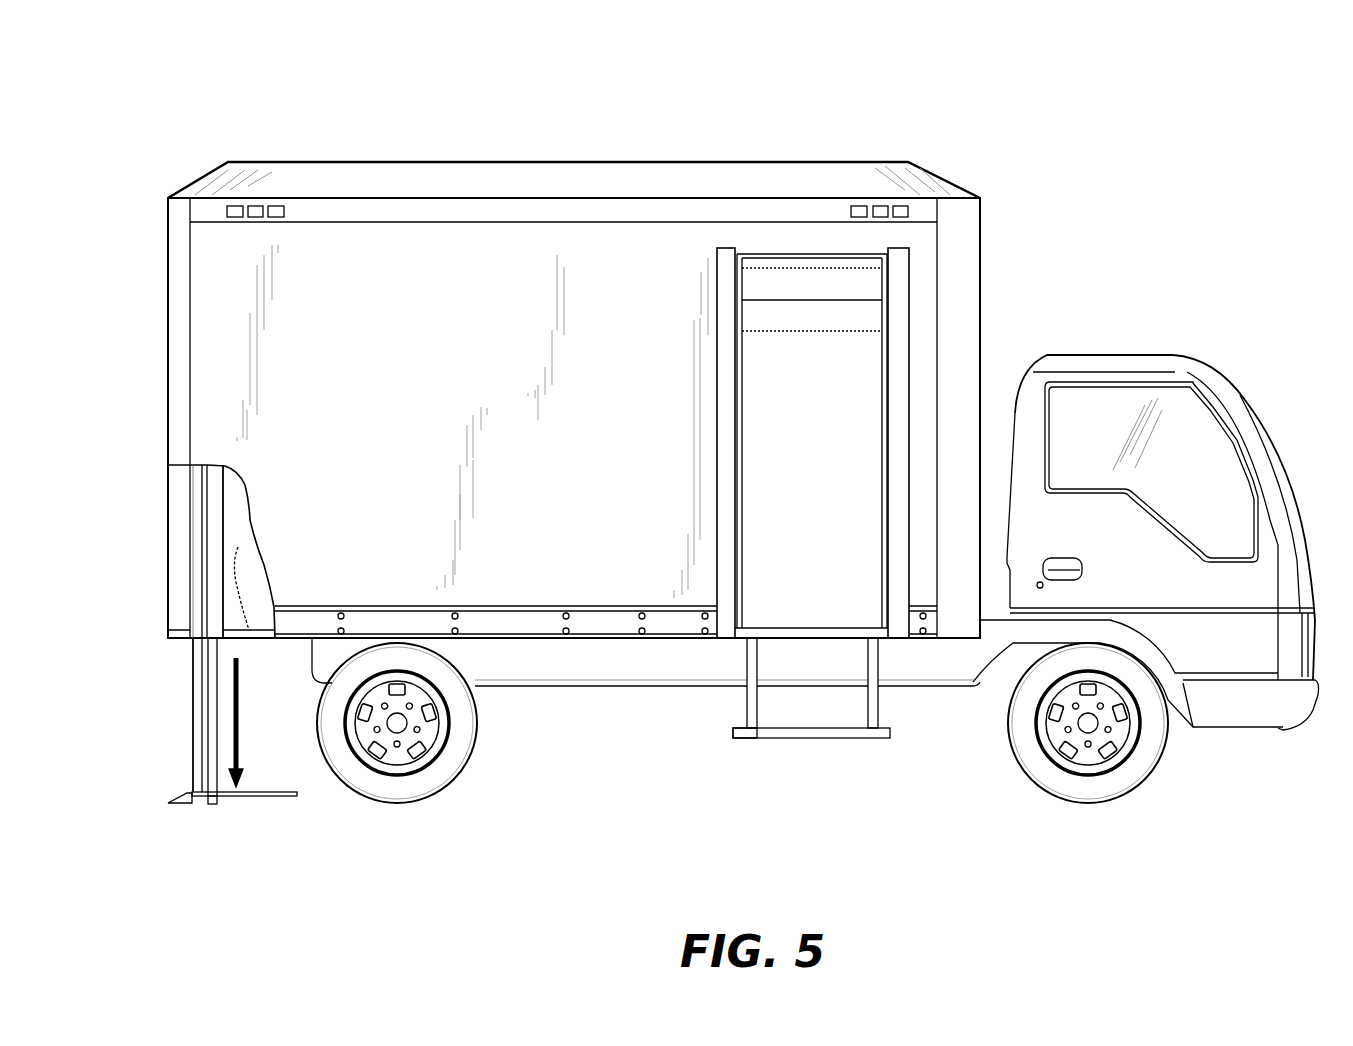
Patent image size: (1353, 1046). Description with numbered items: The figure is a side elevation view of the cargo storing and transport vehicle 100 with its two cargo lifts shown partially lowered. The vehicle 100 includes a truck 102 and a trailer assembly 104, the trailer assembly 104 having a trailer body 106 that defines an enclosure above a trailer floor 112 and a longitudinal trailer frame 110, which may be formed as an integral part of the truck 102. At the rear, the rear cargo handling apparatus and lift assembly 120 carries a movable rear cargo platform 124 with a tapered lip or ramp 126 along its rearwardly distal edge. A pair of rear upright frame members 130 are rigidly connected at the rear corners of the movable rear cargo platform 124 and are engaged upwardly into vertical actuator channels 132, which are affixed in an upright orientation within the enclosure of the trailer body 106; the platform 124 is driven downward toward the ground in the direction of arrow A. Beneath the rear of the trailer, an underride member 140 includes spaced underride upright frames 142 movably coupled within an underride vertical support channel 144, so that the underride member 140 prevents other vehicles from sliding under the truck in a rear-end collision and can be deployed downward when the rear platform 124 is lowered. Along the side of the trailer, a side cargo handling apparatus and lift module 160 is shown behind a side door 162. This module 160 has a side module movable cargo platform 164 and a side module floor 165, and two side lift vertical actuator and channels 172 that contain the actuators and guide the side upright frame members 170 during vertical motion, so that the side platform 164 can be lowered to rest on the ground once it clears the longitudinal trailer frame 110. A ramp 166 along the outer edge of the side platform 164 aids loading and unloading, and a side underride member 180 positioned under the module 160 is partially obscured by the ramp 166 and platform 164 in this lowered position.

The cargo storing and transport vehicle 100 is at (1072, 116).
The truck 102 is at (1130, 362).
The trailer assembly 104 is at (271, 132).
The trailer body 106 is at (543, 185).
The longitudinal trailer frame 110 is at (580, 663).
The trailer floor 112 is at (238, 547).
The rear cargo handling apparatus and lift assembly 120 is at (156, 814).
The movable rear cargo platform 124 is at (267, 788).
The tapered lip or ramp 126 is at (185, 793).
The rear upright frame member 130 is at (198, 670).
The vertical actuator channel 132 is at (198, 490).
The underride member 140 is at (212, 805).
The underride upright frame 142 is at (215, 717).
The underride vertical support channel 144 is at (215, 555).
The side cargo handling apparatus and lift module 160 is at (882, 772).
The side door 162 is at (800, 285).
The side module movable cargo platform 164 is at (797, 728).
The side module floor 165 is at (797, 628).
The ramp 166 is at (830, 737).
The side upright frame member 170 is at (747, 695).
The side lift vertical actuator and channel 172 is at (881, 425).
The side underride member 180 is at (745, 733).
The arrow A is at (240, 741).